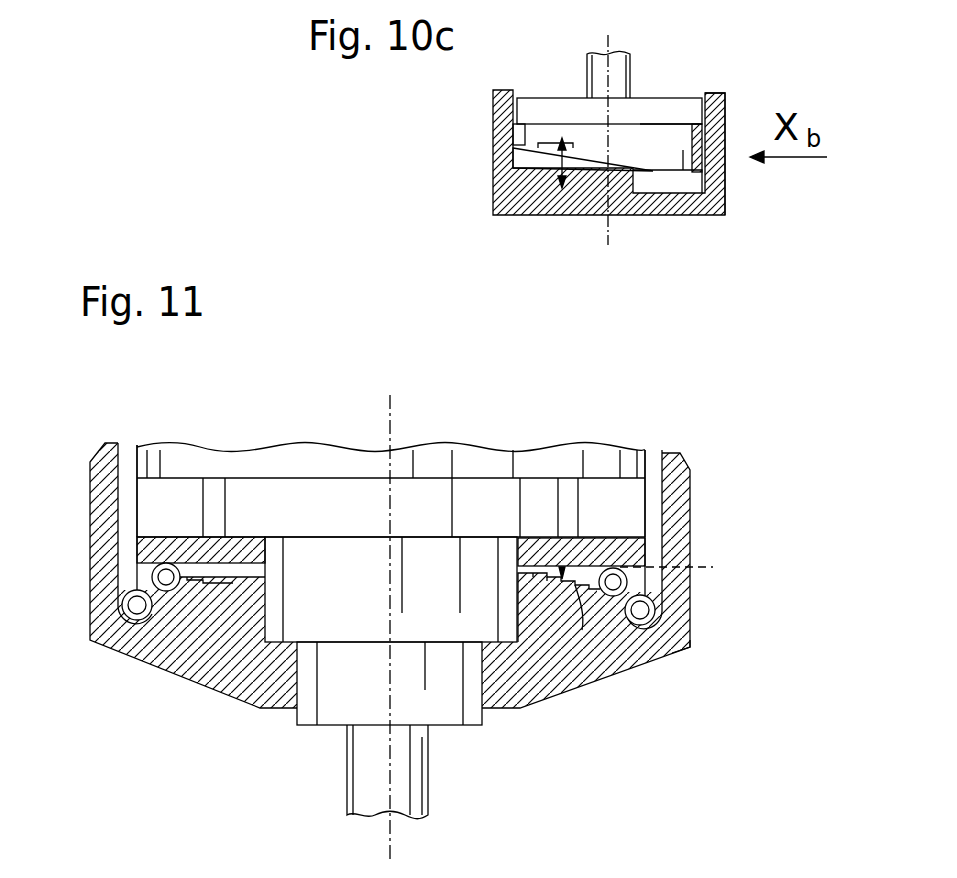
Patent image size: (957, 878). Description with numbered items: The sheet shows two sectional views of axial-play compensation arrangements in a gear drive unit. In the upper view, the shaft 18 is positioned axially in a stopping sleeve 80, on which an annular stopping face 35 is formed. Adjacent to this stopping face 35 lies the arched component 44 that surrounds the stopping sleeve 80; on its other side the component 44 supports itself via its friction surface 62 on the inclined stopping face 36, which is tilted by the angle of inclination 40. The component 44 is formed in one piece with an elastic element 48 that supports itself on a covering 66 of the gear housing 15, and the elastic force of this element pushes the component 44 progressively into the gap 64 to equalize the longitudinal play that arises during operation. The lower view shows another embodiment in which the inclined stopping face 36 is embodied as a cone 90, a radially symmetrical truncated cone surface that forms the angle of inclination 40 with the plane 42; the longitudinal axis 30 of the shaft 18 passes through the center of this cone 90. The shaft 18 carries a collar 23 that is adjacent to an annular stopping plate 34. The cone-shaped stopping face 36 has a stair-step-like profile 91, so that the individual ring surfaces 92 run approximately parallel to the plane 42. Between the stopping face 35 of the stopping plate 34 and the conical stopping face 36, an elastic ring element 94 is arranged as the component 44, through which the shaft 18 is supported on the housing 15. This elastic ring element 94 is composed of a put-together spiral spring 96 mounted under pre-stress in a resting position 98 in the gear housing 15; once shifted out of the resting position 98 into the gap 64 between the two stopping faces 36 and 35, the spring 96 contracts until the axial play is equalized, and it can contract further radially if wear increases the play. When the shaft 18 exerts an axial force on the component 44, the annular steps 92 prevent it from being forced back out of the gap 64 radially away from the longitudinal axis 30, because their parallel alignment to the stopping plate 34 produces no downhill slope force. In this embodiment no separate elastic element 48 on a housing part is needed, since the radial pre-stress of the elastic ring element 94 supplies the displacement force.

In FIG. 10c, the gear housing 15 is at (513, 215).
In FIG. 11, the gear housing 15 is at (197, 660).
In FIG. 10c, the shaft 18 is at (590, 62).
In FIG. 11, the shaft 18 is at (437, 712).
In FIG. 11, the collar 23 is at (217, 505).
In FIG. 10c, the longitudinal axis 30 is at (610, 245).
In FIG. 11, the longitudinal axis 30 is at (392, 420).
In FIG. 11, the stopping plate 34 is at (145, 552).
In FIG. 10c, the stopping face 35 is at (652, 128).
In FIG. 11, the stopping face 35 is at (593, 560).
In FIG. 10c, the inclined stopping face 36 is at (513, 147).
In FIG. 10c, the angle of inclination 40 is at (543, 163).
In FIG. 11, the plane 42 is at (713, 568).
In FIG. 10c, the component 44 is at (683, 153).
In FIG. 11, the component 44 is at (160, 585).
In FIG. 10c, the elastic element 48 is at (705, 172).
In FIG. 10c, the friction surface 62 is at (593, 167).
In FIG. 11, the friction surface 62 is at (632, 590).
In FIG. 10c, the gap 64 is at (520, 133).
In FIG. 11, the gap 64 is at (528, 570).
In FIG. 10c, the covering 66 is at (718, 108).
In FIG. 10c, the stopping sleeve 80 is at (648, 112).
In FIG. 11, the cone 90 is at (177, 537).
In FIG. 11, the stair-step-like profile 91 is at (560, 562).
In FIG. 11, the ring surfaces 92 is at (578, 592).
In FIG. 11, the elastic ring element 94 is at (655, 610).
In FIG. 11, the spiral spring 96 is at (718, 639).
In FIG. 11, the resting position 98 is at (670, 647).